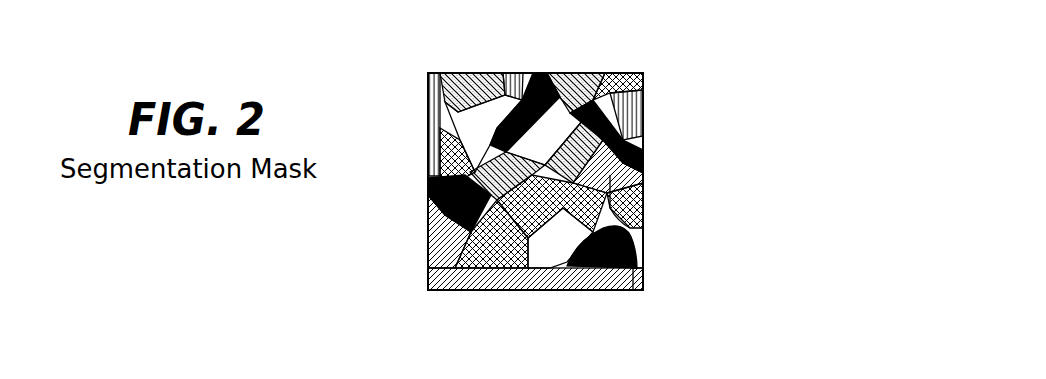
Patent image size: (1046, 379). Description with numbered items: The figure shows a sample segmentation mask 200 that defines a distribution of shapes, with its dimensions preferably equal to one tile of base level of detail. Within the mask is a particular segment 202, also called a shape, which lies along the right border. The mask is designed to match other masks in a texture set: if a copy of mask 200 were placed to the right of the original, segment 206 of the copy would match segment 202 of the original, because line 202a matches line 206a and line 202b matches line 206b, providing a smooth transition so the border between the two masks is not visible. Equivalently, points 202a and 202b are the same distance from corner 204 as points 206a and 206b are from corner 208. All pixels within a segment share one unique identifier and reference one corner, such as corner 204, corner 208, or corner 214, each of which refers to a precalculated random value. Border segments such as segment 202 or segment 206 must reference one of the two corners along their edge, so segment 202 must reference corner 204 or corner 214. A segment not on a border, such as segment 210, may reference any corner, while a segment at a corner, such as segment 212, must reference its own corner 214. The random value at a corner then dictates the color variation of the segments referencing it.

The segmentation mask 200 is at (283, 288).
The segment 202 is at (641, 130).
The line 202a is at (641, 88).
The line 202b is at (633, 117).
The corner 204 is at (643, 73).
The segment 206 is at (430, 115).
The line 206a is at (430, 90).
The line 206b is at (430, 128).
The corner 208 is at (430, 77).
The segment 210 is at (540, 290).
The segment 212 is at (637, 272).
The corner 214 is at (643, 292).